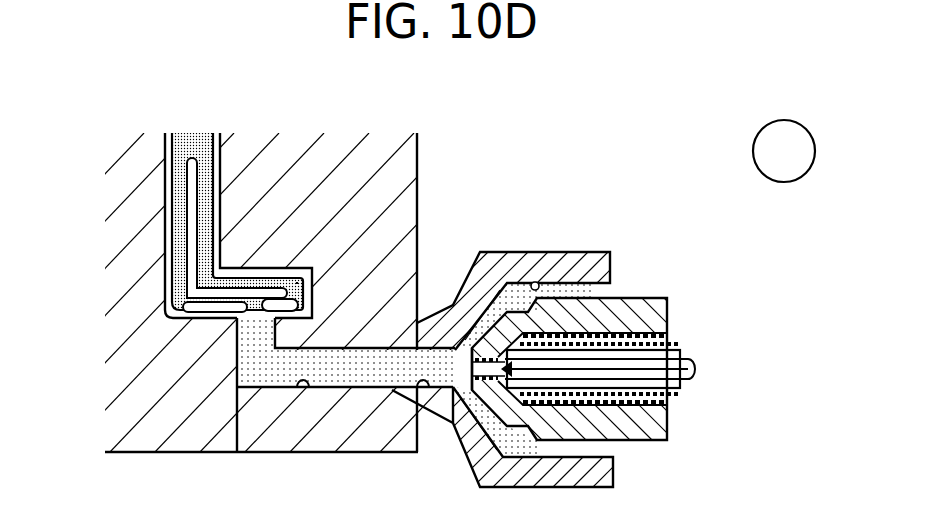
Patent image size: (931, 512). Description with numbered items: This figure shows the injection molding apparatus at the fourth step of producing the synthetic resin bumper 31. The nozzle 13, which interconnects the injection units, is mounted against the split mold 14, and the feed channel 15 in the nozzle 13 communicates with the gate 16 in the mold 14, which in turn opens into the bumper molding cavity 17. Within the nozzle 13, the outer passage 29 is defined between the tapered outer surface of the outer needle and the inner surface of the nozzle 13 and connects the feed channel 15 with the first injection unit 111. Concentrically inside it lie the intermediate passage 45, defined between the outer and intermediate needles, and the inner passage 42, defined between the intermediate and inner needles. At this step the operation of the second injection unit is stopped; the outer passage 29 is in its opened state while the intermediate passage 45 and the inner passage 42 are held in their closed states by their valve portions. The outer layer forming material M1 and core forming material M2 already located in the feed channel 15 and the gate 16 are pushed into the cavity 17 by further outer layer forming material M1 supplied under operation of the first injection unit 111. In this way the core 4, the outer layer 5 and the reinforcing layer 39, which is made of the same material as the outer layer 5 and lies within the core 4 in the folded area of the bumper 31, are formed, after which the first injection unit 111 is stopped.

The core 4 is at (165, 140).
The bumper 31 is at (230, 153).
The split mold 14 is at (137, 193).
The outer layer 5 is at (213, 200).
The reinforcing layer 39 is at (188, 223).
The bumper molding cavity 17 is at (178, 263).
The outer layer forming material M1 is at (217, 223).
The core forming material M2 is at (295, 283).
The nozzle 13 is at (508, 263).
The outer passage 29 is at (535, 282).
The intermediate passage 45 is at (645, 310).
The inner passage 42 is at (647, 392).
The first injection unit 111 is at (595, 292).
The gate 16 is at (308, 388).
The feed channel 15 is at (428, 390).